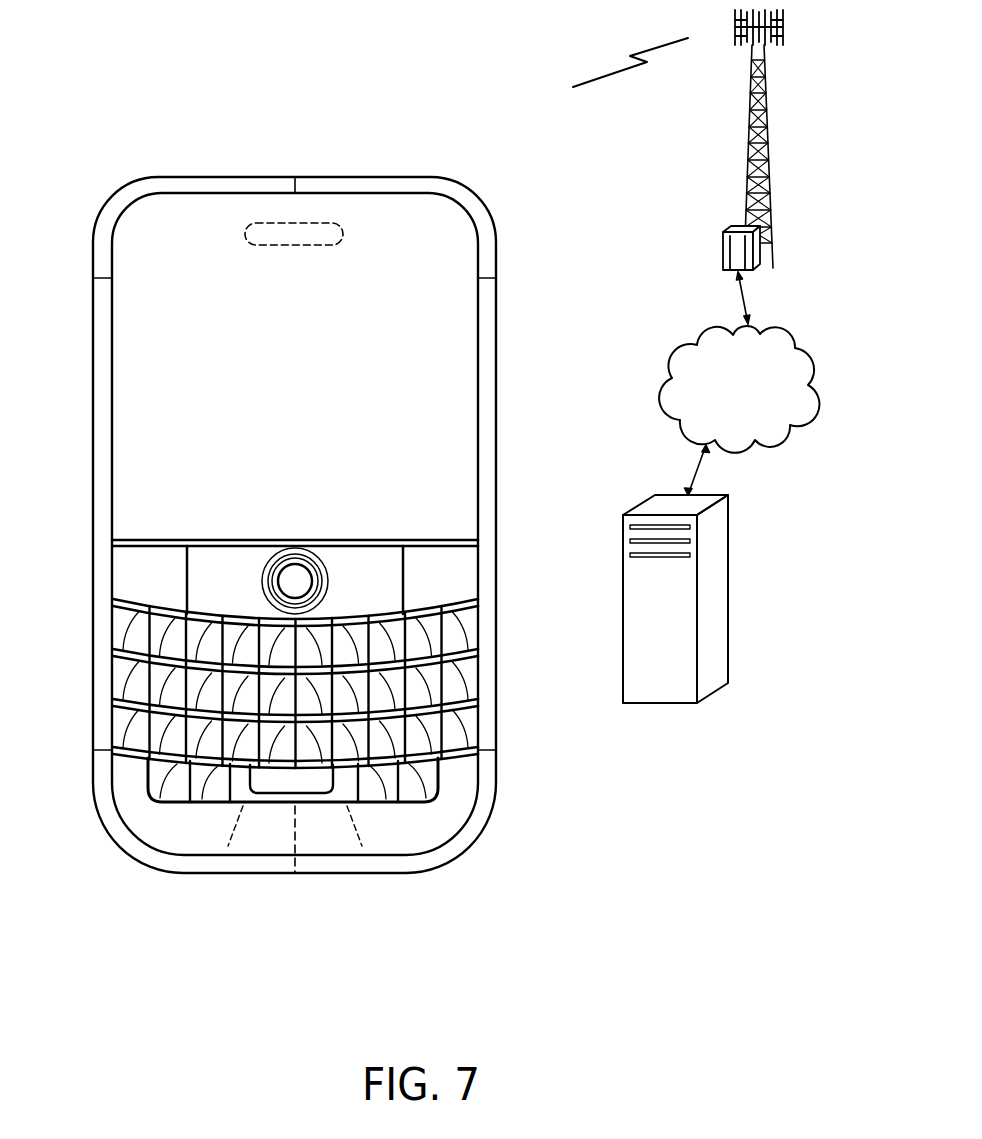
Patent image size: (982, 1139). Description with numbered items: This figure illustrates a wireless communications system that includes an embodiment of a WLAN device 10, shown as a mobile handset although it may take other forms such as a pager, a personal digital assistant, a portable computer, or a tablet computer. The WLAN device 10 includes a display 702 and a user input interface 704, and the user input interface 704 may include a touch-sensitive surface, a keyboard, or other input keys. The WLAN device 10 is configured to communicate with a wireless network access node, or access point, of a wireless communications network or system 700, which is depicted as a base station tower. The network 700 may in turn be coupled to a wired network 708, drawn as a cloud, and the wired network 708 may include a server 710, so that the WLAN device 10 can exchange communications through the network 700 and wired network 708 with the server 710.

The WLAN device 10 is at (243, 875).
The wireless communications network 700 is at (745, 153).
The display 702 is at (503, 260).
The user input interface 704 is at (533, 495).
The wired network 708 is at (683, 426).
The server 710 is at (660, 703).